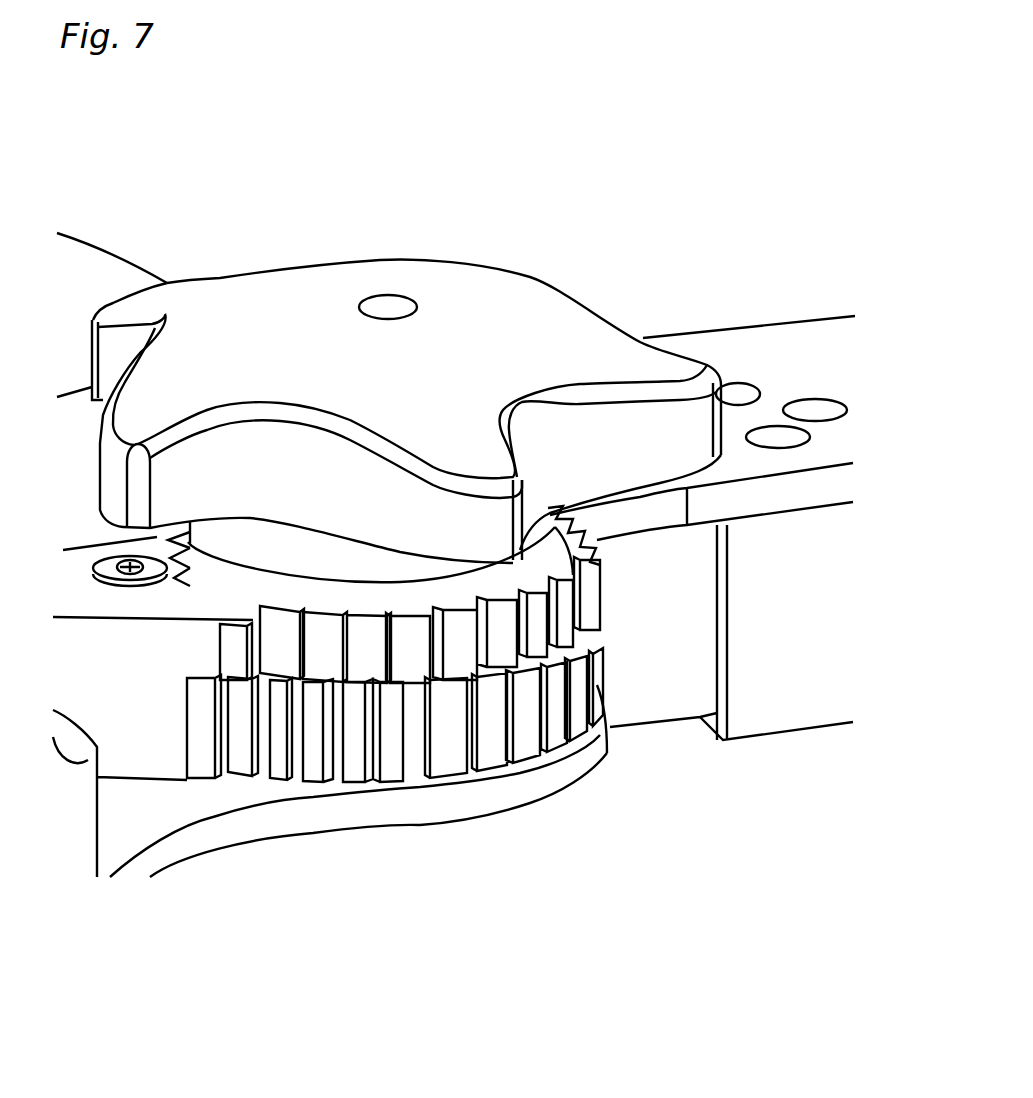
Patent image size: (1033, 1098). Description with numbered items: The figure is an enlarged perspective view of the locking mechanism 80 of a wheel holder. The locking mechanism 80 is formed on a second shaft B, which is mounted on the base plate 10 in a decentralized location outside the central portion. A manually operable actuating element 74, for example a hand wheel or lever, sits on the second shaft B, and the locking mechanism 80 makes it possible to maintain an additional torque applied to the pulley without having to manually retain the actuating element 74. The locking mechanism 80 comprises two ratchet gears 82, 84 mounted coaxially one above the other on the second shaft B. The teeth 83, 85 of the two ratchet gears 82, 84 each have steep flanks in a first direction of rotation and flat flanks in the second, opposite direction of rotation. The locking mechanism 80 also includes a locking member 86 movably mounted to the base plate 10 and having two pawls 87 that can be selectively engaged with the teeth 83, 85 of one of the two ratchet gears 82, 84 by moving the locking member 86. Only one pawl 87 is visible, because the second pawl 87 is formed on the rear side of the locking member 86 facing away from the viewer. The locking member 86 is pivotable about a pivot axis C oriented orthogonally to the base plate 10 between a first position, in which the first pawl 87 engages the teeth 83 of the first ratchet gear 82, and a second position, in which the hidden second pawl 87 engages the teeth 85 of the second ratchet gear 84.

The base plate 10 is at (202, 840).
The actuating element 74 is at (592, 255).
The second shaft B is at (383, 305).
The locking member 86 is at (57, 553).
The pivot axis C is at (130, 579).
The first ratchet gear 82 is at (615, 605).
The teeth of the first ratchet gear 83 is at (370, 657).
The second ratchet gear 84 is at (262, 786).
The pawl 87 is at (237, 667).
The teeth of the second ratchet gear 85 is at (493, 753).
The locking mechanism 80 is at (619, 850).